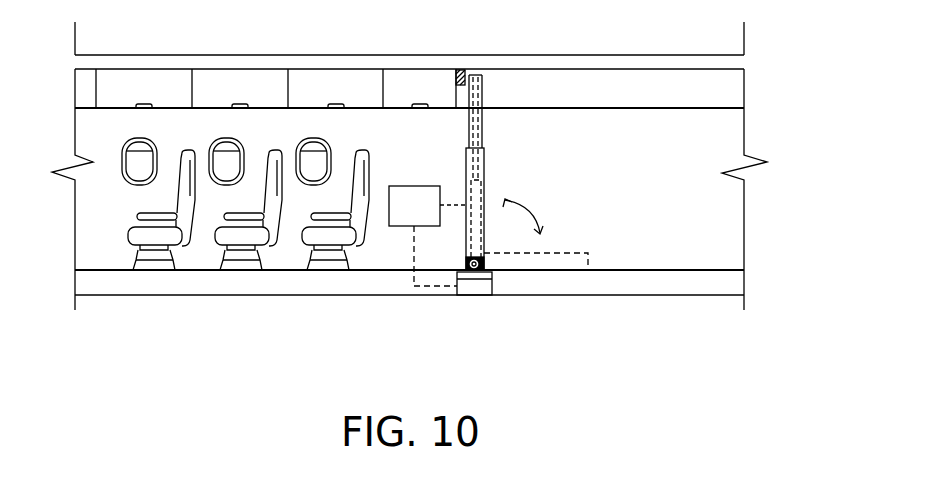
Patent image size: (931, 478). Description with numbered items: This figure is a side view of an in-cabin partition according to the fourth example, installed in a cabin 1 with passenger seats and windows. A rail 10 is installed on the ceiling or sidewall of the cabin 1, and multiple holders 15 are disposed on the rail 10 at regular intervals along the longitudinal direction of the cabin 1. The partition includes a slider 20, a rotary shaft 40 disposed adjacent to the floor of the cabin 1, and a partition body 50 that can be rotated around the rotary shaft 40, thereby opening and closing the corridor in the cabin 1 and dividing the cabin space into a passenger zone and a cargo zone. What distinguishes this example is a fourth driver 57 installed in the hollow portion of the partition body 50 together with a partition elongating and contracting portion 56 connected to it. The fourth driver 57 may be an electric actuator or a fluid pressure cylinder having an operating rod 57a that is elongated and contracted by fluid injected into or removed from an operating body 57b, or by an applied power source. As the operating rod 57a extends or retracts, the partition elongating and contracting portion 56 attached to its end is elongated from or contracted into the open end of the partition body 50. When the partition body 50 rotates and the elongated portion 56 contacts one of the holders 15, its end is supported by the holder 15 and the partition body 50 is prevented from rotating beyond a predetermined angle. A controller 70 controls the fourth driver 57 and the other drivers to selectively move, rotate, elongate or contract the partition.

The cabin 1 is at (393, 128).
The rail 10 is at (609, 61).
The holder 15 is at (459, 70).
The slider 20 is at (474, 287).
The rotary shaft 40 is at (467, 258).
The partition body 50 is at (484, 258).
The partition elongating and contracting portion 56 is at (481, 85).
The fourth driver 57 is at (564, 142).
The operating rod 57a is at (481, 98).
The operating body 57b is at (483, 192).
The controller 70 is at (429, 221).